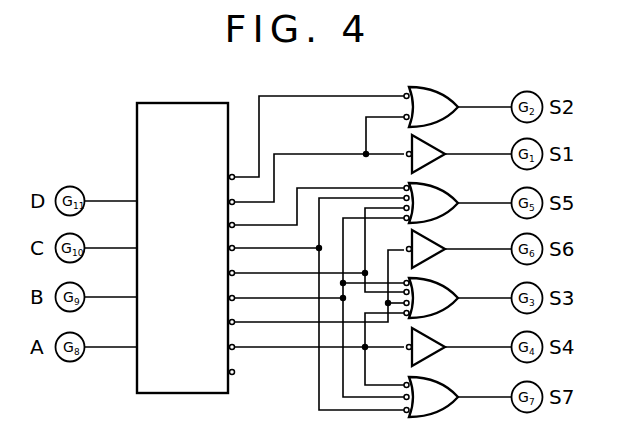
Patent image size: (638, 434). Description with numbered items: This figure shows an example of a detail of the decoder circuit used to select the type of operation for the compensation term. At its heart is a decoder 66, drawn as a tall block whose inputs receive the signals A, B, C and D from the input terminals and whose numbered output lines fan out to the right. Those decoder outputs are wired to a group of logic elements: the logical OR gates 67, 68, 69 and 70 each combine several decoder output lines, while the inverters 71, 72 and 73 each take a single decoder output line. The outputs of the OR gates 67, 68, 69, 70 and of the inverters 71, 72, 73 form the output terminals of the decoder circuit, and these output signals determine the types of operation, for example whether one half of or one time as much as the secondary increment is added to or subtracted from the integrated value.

The decoder 66 is at (181, 103).
The logical OR gate 67 is at (449, 96).
The logical OR gate 68 is at (449, 192).
The logical OR gate 69 is at (449, 292).
The logical OR gate 70 is at (449, 389).
The inverter 71 is at (444, 151).
The inverter 72 is at (444, 244).
The inverter 73 is at (445, 342).